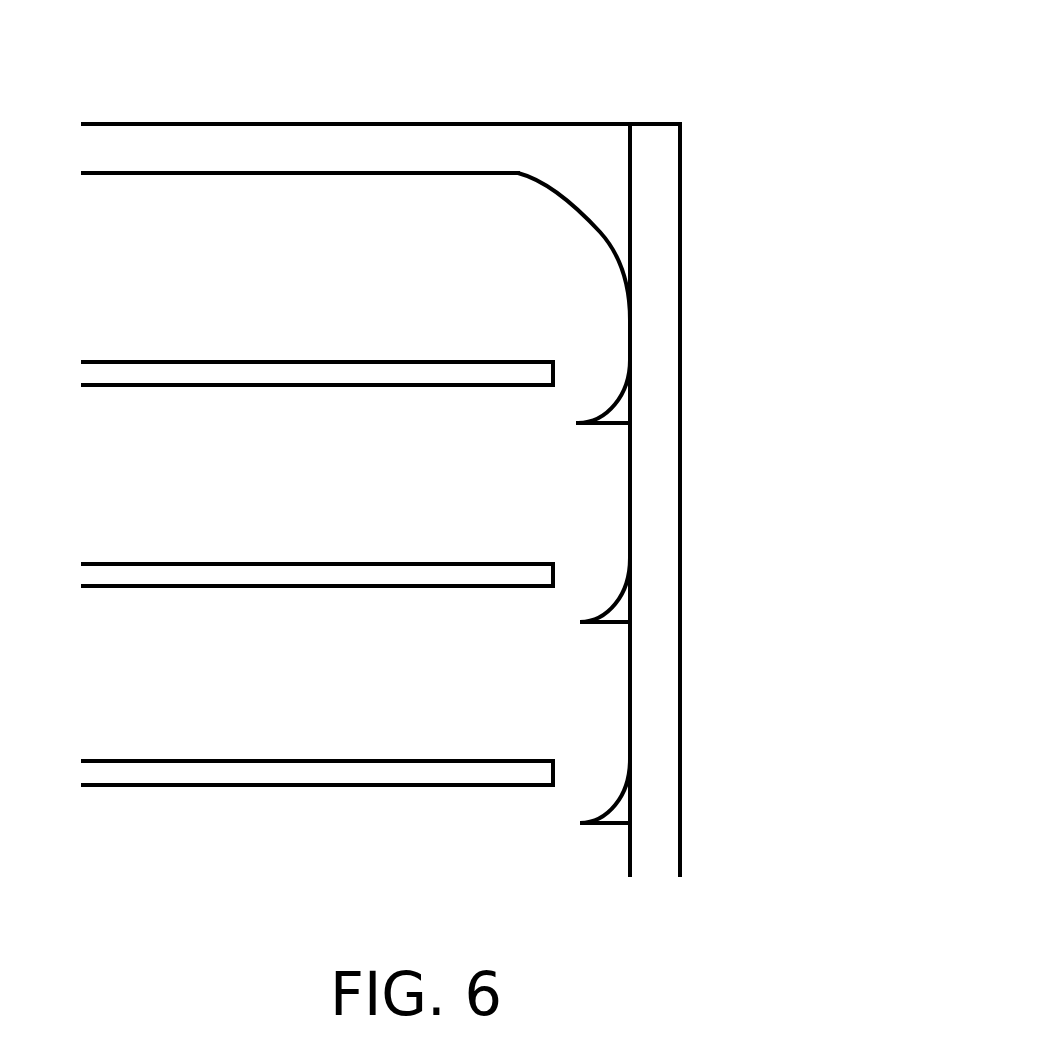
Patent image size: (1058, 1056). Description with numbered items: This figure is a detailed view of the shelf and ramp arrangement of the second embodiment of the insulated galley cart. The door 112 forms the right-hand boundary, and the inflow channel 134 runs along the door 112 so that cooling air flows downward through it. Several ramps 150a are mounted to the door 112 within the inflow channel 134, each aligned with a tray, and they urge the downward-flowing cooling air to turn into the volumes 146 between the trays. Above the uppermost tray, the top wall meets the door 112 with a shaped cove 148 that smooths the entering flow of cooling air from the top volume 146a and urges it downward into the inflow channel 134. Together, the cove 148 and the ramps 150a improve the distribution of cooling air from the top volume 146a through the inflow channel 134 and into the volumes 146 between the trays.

The door 112 is at (658, 487).
The inflow channel 134 is at (593, 367).
The volumes between the trays 146 is at (252, 718).
The top volume 146a is at (247, 305).
The shaped cove 148 is at (592, 226).
The ramps 150a is at (620, 412).